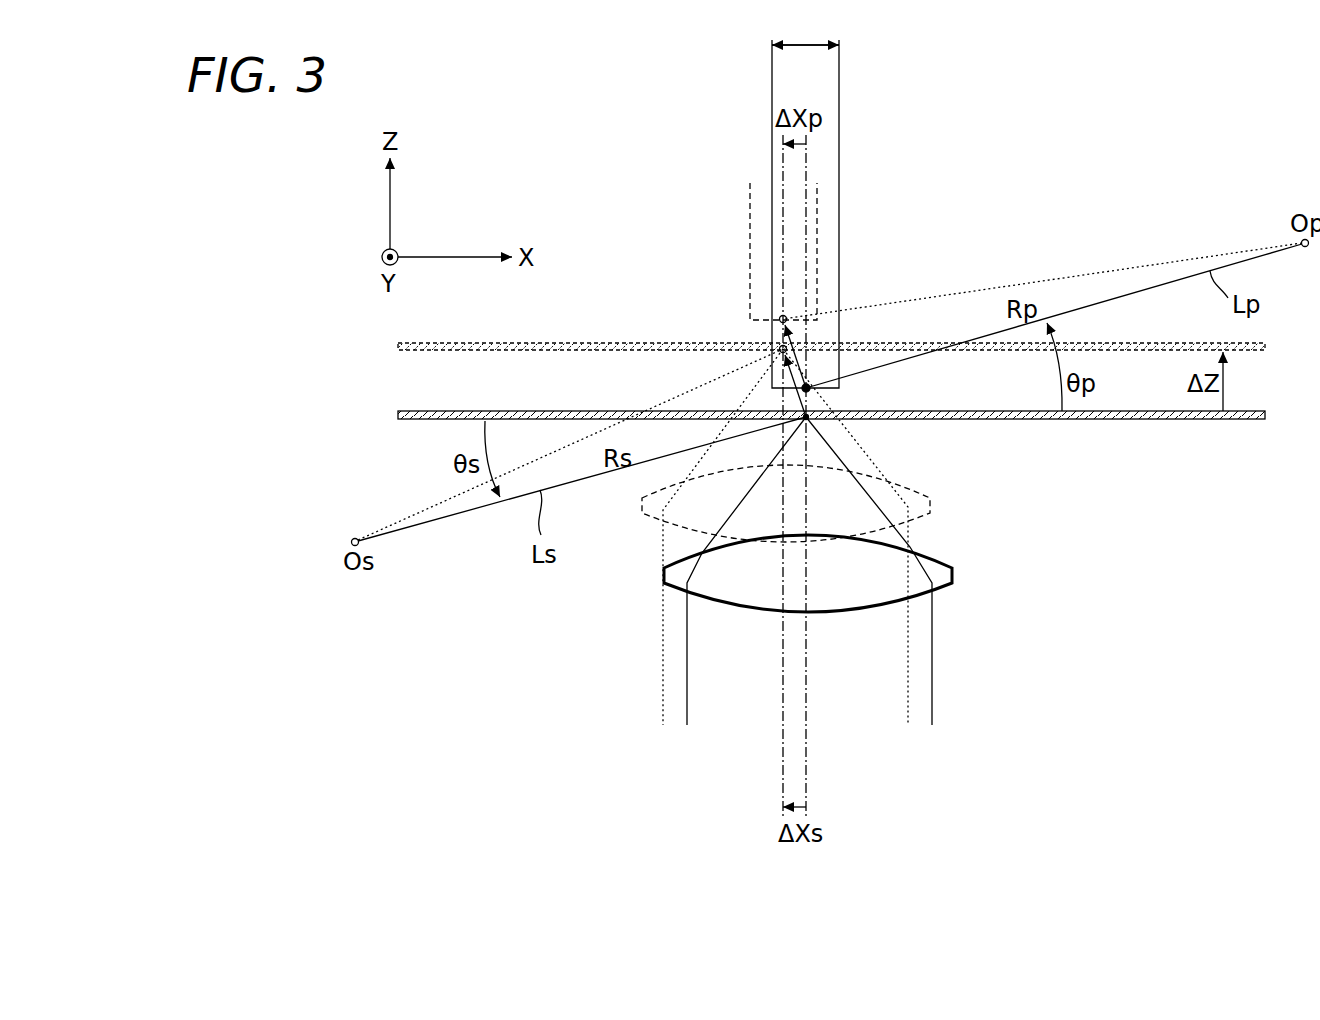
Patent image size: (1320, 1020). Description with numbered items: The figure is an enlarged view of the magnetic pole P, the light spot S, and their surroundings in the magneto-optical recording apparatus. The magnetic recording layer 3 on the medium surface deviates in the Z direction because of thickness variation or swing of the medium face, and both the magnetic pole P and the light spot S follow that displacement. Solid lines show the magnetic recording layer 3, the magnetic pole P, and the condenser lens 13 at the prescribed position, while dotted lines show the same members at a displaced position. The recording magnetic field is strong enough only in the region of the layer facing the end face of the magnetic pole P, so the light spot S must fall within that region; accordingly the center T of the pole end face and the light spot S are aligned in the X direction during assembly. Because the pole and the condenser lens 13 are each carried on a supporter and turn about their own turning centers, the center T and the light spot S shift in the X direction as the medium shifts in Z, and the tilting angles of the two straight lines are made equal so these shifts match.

The magnetic recording layer 3 is at (1155, 420).
The condenser lens 13 is at (952, 575).
The magnetic pole P is at (832, 282).
The center of the end face of magnetic pole T is at (810, 384).
The light spot S is at (808, 419).